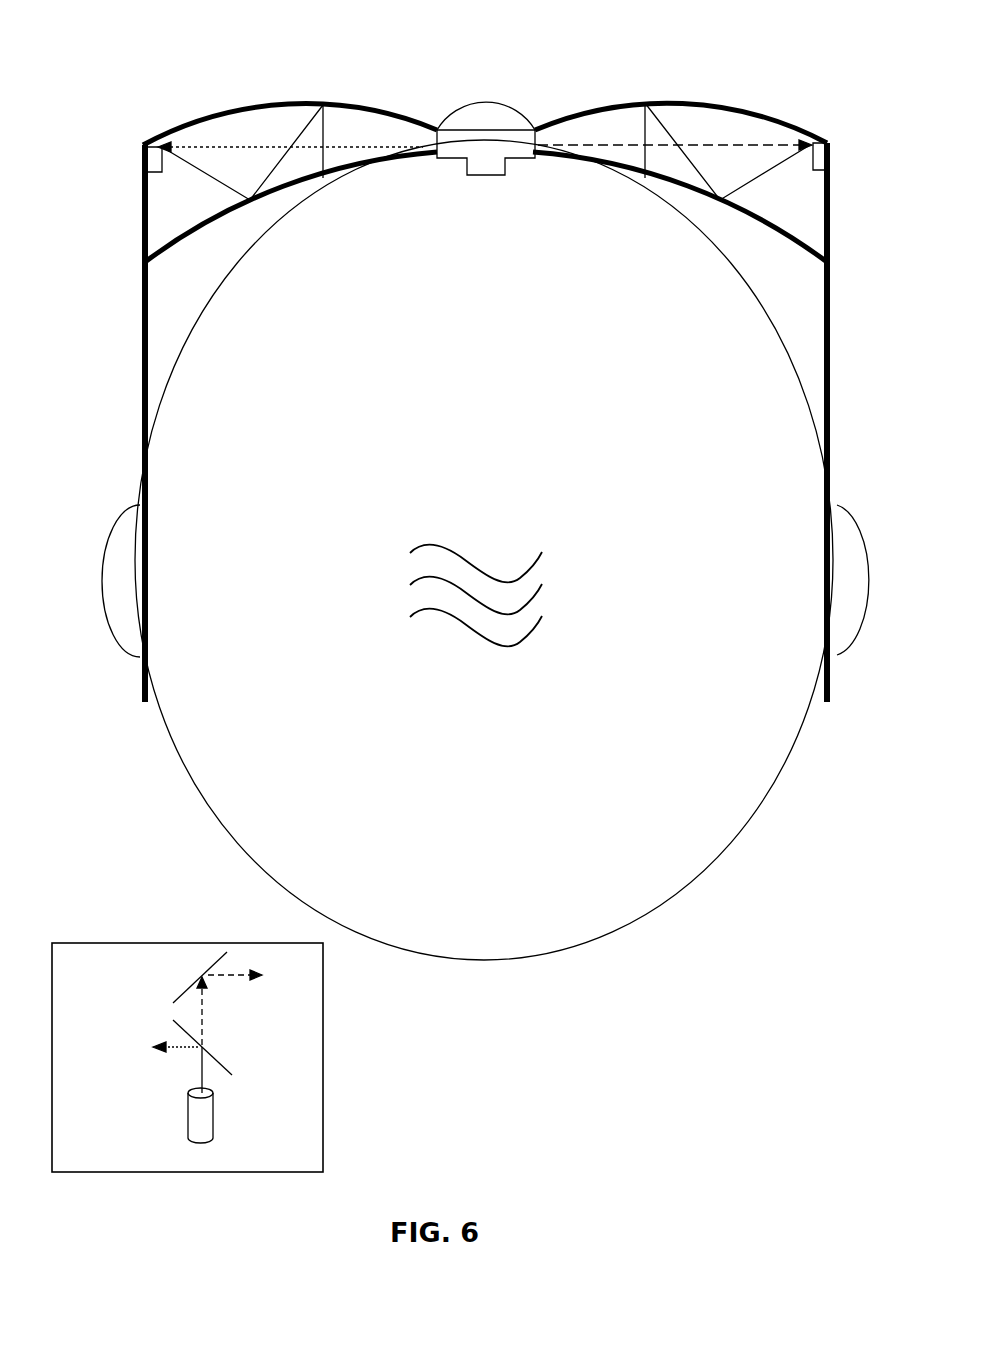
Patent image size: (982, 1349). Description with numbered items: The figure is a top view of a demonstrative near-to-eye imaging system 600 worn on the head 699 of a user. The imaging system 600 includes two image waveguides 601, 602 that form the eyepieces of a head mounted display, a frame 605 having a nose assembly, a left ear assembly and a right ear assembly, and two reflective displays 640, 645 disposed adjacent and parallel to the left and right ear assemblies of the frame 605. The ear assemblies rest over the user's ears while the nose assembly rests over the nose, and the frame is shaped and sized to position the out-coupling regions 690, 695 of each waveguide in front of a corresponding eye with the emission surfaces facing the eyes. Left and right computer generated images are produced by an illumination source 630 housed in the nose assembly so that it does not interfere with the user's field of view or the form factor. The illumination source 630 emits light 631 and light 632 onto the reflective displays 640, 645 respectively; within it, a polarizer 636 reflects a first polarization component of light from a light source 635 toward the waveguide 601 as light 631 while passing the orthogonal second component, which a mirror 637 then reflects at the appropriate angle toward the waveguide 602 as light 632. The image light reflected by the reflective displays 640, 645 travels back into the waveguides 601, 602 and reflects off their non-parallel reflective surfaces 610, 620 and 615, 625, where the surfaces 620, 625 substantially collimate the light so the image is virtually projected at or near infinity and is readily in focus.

The imaging system 600 is at (872, 357).
The image waveguide 601 is at (265, 125).
The image waveguide 602 is at (688, 125).
The frame 605 is at (142, 482).
The reflective surface 610 is at (185, 243).
The reflective surface 615 is at (763, 227).
The reflective surface 620 is at (202, 118).
The reflective surface 625 is at (758, 117).
The illumination source 630 is at (477, 157).
The light 631 is at (422, 147).
The light 632 is at (553, 147).
The light source 635 is at (202, 1118).
The polarizer 636 is at (223, 1065).
The mirror 637 is at (182, 993).
The reflective display 640 is at (142, 145).
The reflective display 645 is at (829, 153).
The out-coupling region 690 is at (325, 183).
The out-coupling region 695 is at (645, 180).
The head 699 is at (485, 550).